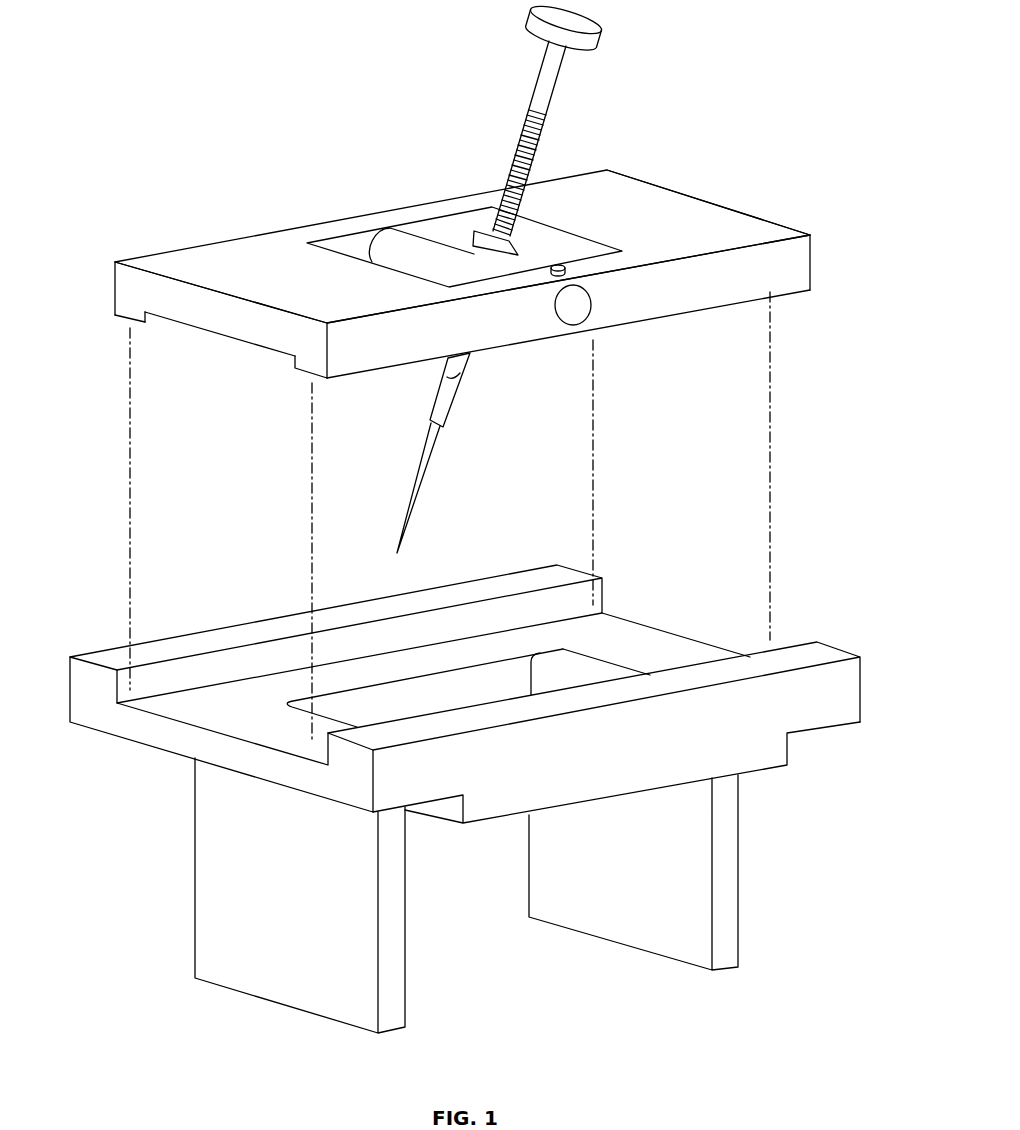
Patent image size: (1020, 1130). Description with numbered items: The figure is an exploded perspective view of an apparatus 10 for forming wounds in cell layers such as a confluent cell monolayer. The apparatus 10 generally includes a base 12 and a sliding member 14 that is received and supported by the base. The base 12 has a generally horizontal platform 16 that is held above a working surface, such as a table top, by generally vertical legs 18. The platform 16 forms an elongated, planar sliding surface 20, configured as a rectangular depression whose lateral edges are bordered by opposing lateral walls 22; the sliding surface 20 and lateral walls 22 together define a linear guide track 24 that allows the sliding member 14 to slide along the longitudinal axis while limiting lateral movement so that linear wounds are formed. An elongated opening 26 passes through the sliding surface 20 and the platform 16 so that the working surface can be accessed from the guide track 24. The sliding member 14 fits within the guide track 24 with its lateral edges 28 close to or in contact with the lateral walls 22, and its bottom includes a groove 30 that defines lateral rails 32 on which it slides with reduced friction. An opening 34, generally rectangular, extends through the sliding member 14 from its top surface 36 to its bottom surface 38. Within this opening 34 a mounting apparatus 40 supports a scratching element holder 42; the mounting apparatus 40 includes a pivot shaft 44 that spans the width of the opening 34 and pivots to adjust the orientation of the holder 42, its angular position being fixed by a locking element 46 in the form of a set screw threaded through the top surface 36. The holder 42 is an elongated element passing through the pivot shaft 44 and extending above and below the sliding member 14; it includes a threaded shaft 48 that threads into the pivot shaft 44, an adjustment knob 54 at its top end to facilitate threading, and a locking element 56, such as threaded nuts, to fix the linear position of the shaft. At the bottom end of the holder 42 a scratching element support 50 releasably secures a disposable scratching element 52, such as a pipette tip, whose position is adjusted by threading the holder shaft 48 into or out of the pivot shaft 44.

The apparatus 10 is at (121, 114).
The base 12 is at (869, 629).
The sliding member 14 is at (841, 223).
The platform 16 is at (109, 747).
The legs 18 is at (234, 978).
The sliding surface 20 is at (630, 633).
The lateral walls 22 is at (163, 672).
The linear guide track 24 is at (461, 623).
The opening 26 is at (405, 701).
The lateral edges 28 is at (113, 275).
The groove 30 is at (233, 352).
The lateral rails 32 is at (109, 324).
The opening 34 is at (333, 241).
The top surface 36 is at (668, 203).
The bottom surface 38 is at (196, 328).
The mounting apparatus 40 is at (373, 188).
The scratching element holder 42 is at (492, 160).
The pivot shaft 44 is at (408, 268).
The locking element 46 is at (555, 267).
The threaded shaft 48 is at (543, 137).
The scratching element support 50 is at (463, 405).
The scratching element 52 is at (420, 477).
The adjustment knob 54 is at (597, 40).
The locking element 56 is at (480, 254).